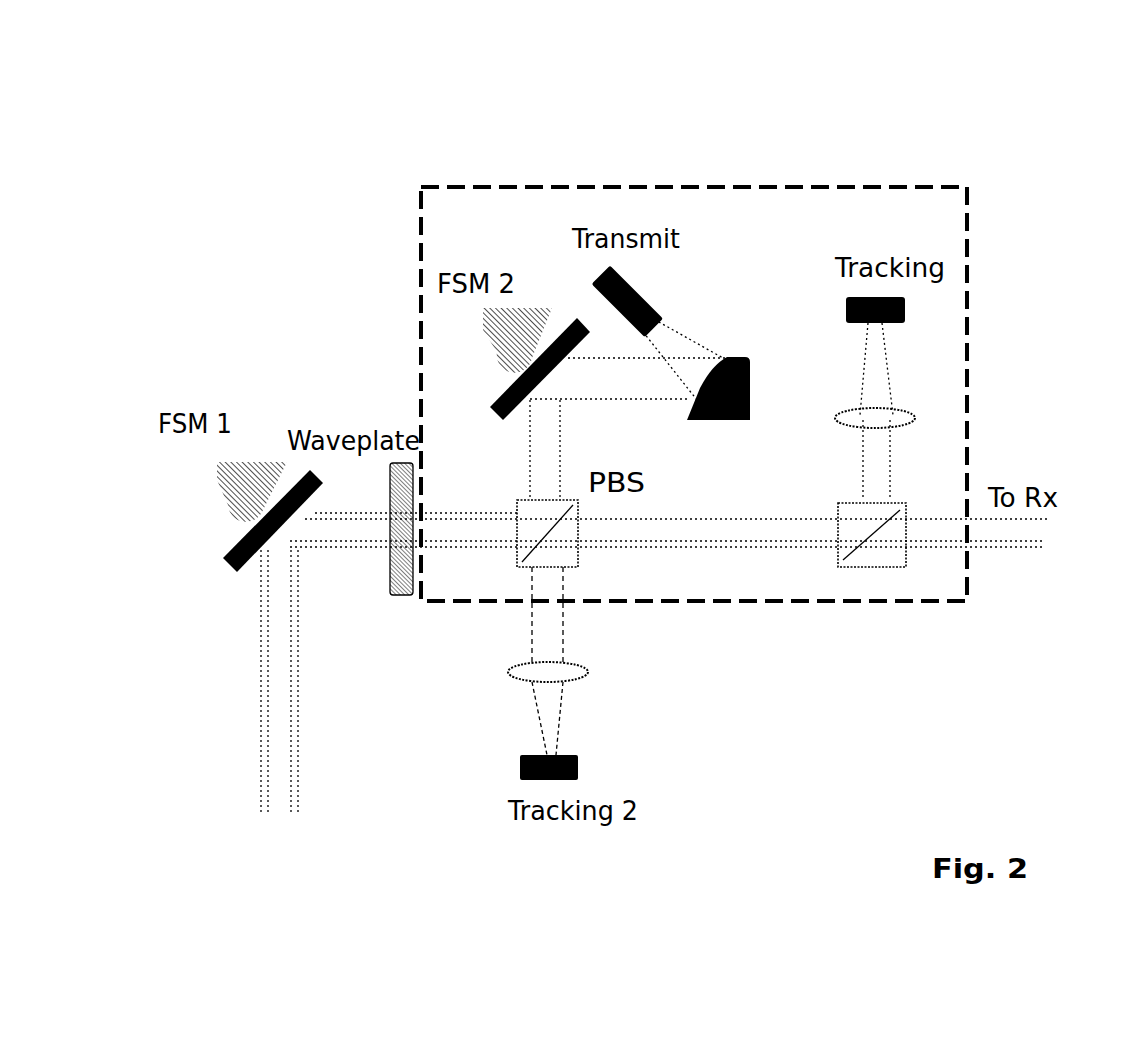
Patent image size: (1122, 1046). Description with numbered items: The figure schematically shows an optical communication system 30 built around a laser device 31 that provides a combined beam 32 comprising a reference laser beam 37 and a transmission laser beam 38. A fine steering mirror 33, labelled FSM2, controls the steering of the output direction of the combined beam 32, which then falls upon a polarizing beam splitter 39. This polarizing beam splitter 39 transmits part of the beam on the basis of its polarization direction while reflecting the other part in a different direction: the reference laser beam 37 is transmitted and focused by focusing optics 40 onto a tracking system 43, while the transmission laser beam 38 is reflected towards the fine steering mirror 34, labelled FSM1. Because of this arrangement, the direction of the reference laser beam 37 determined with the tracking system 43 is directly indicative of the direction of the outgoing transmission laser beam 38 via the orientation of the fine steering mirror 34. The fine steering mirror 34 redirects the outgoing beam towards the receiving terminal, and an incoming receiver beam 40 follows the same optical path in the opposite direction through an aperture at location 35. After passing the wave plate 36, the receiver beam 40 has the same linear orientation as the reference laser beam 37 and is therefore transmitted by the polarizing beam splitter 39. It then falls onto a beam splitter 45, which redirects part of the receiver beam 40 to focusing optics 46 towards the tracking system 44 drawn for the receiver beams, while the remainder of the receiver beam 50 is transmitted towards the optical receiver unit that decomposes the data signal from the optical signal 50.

The optical communication system 30 is at (499, 126).
The laser device 31 is at (651, 297).
The combined beam 32 is at (563, 438).
The fine steering mirror (FSM2) 33 is at (487, 328).
The fine steering mirror 1 (FSM1) 34 is at (225, 478).
The aperture location 35 is at (440, 498).
The wave plate 36 is at (403, 598).
The reference laser beam 37 is at (528, 634).
The transmission laser beam 38 is at (298, 748).
The polarizing beam splitter 39 is at (578, 560).
The focusing optics / incoming receiver beam 40 is at (590, 678).
The tracking system 43 is at (580, 767).
The tracking detector 44 is at (905, 312).
The beam splitter 45 is at (880, 568).
The focusing optics 46 is at (912, 415).
The remainder of the receiver beam (optical signal) 50 is at (1033, 552).